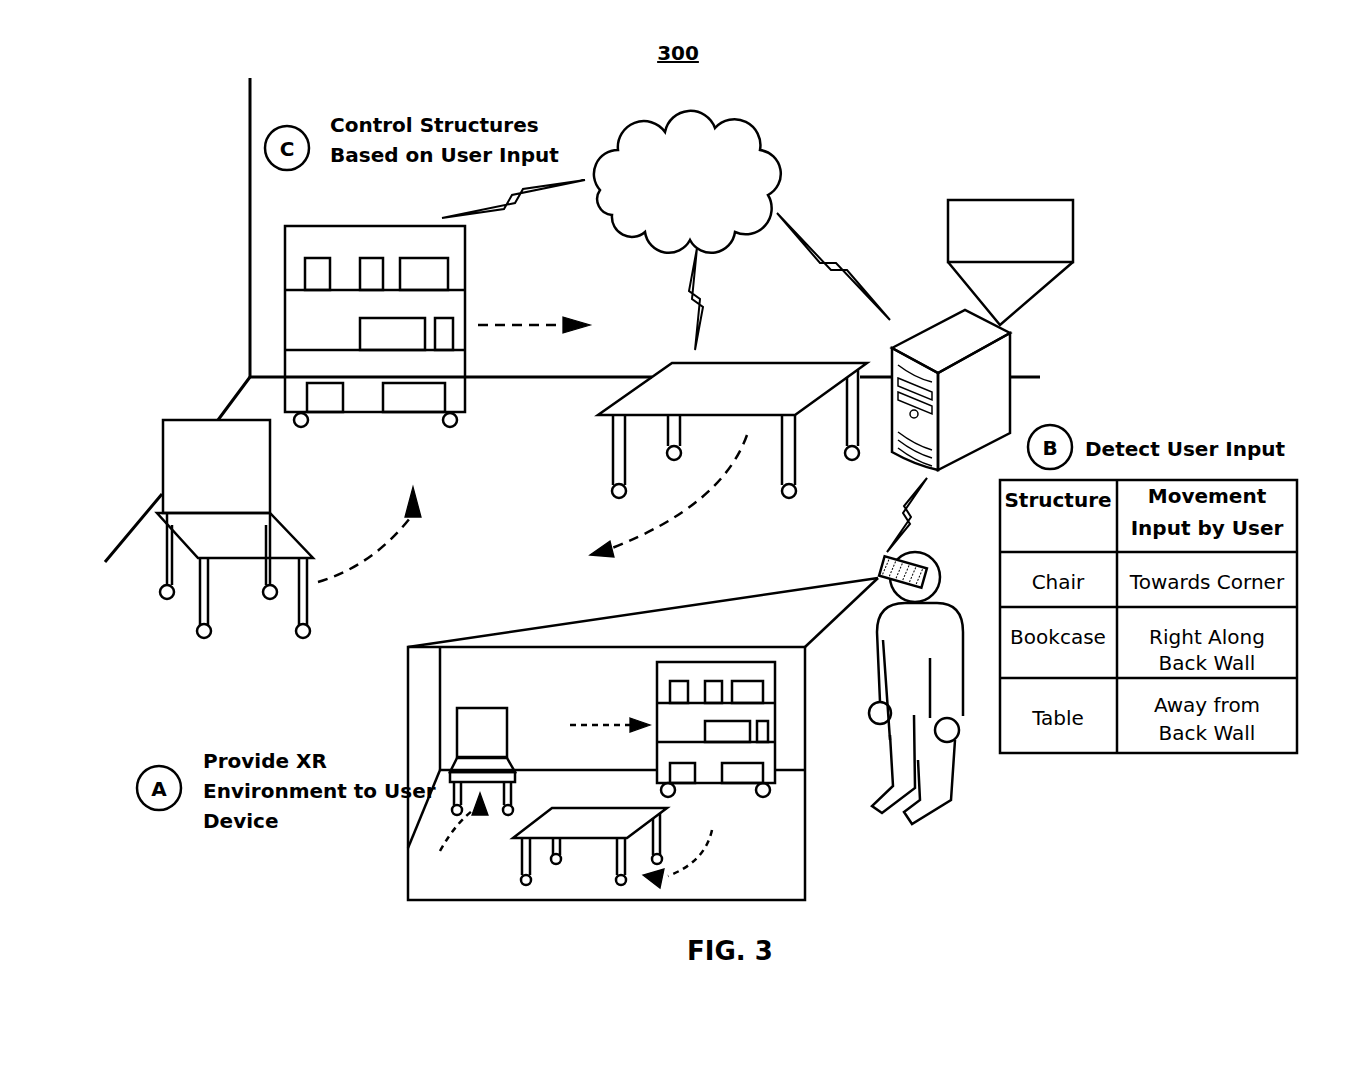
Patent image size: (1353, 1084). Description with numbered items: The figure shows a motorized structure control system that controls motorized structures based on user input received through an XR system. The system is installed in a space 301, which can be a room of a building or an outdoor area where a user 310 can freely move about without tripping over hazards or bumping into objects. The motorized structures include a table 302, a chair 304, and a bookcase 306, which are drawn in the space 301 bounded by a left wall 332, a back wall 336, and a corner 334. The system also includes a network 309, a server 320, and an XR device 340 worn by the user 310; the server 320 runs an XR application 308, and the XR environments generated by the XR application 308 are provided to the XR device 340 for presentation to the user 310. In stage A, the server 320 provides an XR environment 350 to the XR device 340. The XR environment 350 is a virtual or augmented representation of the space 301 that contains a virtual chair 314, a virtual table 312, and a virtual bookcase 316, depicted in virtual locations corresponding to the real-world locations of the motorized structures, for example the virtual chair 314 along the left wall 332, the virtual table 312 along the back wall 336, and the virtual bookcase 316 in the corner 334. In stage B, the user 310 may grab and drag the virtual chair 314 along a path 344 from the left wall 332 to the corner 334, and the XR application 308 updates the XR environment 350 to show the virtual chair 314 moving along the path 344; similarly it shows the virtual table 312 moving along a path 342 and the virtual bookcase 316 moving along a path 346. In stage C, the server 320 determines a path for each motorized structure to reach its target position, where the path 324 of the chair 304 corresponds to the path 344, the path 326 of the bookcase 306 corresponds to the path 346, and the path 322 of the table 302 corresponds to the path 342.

The space 301 is at (888, 186).
The table 302 is at (742, 375).
The chair 304 is at (292, 527).
The bookcase 306 is at (470, 292).
The XR application 308 is at (1022, 200).
The network 309 is at (687, 182).
The user 310 is at (876, 697).
The virtual table 312 is at (590, 846).
The virtual chair 314 is at (482, 761).
The virtual bookcase 316 is at (657, 703).
The server 320 is at (951, 390).
The path of the table 322 is at (685, 512).
The path of the chair 324 is at (395, 542).
The path of the bookcase 326 is at (528, 325).
The left wall 332 is at (125, 545).
The corner 334 is at (248, 233).
The back wall 336 is at (580, 380).
The XR device 340 is at (942, 553).
The path of the virtual table 342 is at (713, 847).
The path of the virtual chair 344 is at (455, 842).
The path of the virtual bookcase 346 is at (573, 720).
The XR environment 350 is at (643, 739).